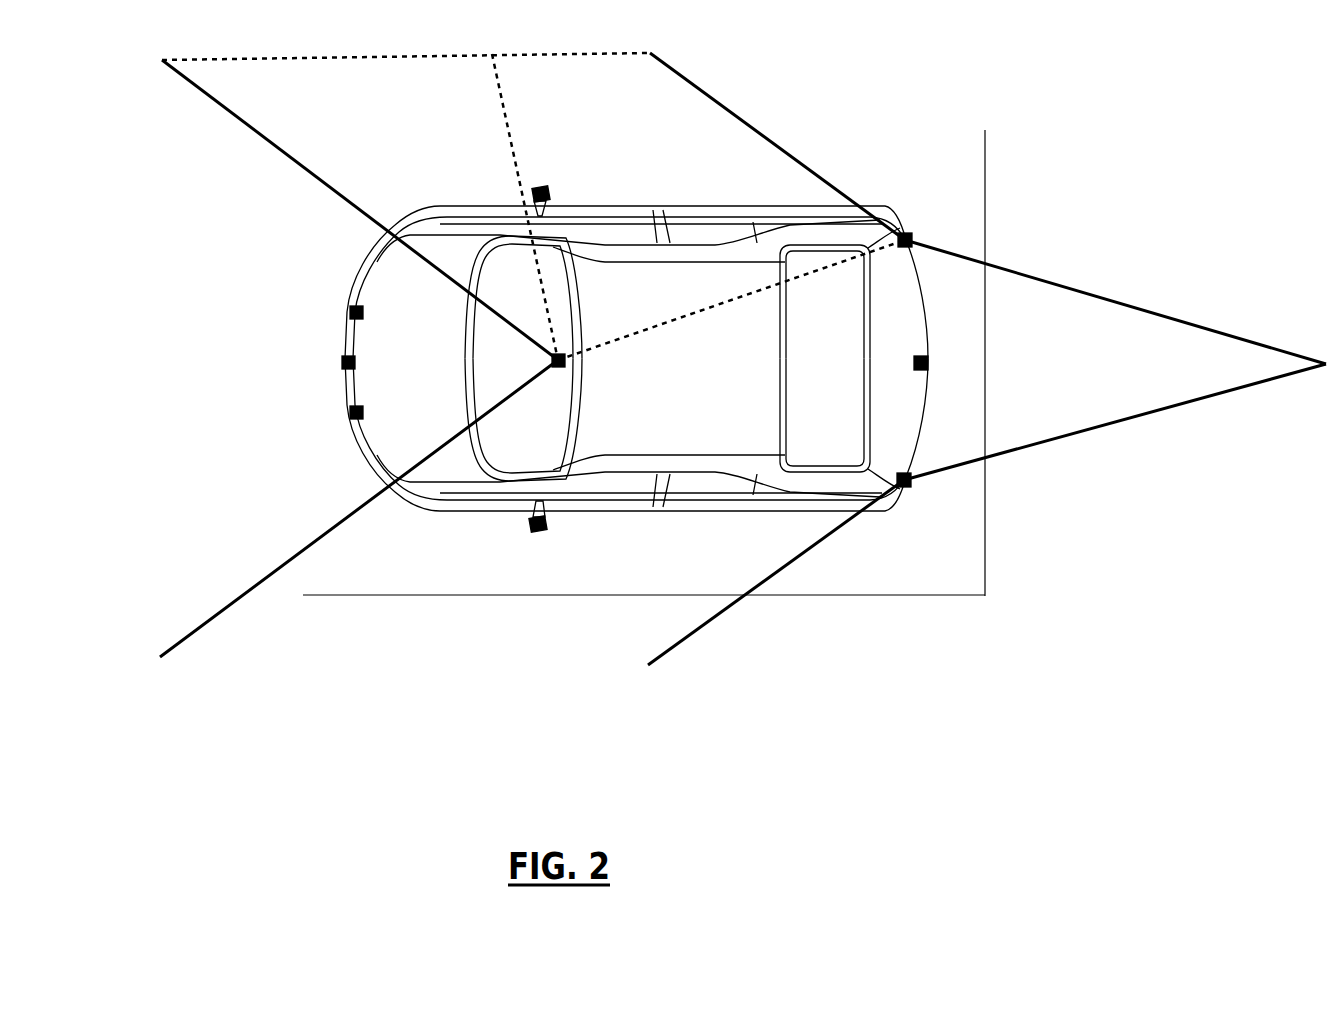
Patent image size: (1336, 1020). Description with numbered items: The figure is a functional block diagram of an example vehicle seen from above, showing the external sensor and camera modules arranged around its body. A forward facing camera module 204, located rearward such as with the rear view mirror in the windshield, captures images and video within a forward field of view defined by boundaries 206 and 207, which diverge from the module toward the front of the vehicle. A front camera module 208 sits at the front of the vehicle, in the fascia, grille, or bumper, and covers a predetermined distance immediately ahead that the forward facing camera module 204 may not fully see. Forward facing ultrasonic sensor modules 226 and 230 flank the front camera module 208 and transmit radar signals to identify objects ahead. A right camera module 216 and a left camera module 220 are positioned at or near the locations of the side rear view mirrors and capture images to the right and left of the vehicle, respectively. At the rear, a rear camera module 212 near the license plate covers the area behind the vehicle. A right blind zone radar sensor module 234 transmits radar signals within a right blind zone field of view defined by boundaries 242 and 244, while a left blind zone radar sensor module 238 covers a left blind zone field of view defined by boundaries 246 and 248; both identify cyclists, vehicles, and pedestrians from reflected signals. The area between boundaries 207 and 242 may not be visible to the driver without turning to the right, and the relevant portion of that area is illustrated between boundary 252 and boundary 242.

The forward facing camera module 204 is at (565, 362).
The boundary 206 is at (316, 546).
The boundary 207 is at (329, 188).
The front camera module 208 is at (342, 361).
The rear camera module 212 is at (928, 362).
The right camera module 216 is at (546, 185).
The left camera module 220 is at (542, 518).
The forward facing ultrasonic sensor module 226 is at (350, 312).
The forward facing ultrasonic sensor module 230 is at (350, 411).
The right blind zone radar sensor module 234 is at (912, 240).
The left blind zone radar sensor module 238 is at (912, 483).
The boundary 242 is at (740, 120).
The boundary 244 is at (1060, 286).
The boundary 246 is at (807, 553).
The boundary 248 is at (1070, 441).
The boundary 252 is at (507, 120).